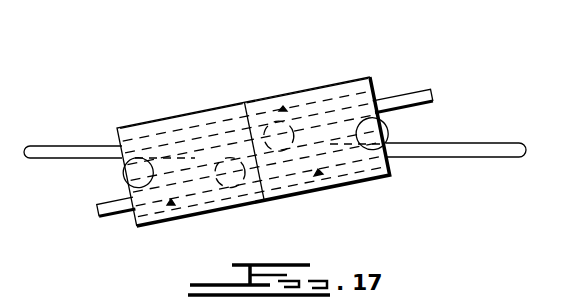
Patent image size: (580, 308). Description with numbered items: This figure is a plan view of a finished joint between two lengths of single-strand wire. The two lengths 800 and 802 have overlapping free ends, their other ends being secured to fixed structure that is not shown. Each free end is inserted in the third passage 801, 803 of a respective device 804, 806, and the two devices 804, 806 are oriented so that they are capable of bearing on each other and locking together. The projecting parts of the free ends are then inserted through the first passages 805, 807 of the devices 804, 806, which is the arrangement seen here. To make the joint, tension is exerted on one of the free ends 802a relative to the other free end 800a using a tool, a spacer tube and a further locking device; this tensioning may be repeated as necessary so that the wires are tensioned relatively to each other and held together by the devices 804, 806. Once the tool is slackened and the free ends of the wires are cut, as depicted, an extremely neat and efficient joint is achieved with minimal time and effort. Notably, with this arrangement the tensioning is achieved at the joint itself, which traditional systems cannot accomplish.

The length of wire 800 is at (60, 150).
The free end of wire 800a is at (397, 90).
The third passage 801 is at (255, 151).
The length of wire 802 is at (441, 152).
The free end of wire 802a is at (112, 213).
The third passage 803 is at (319, 173).
The device 804 is at (160, 127).
The first passage 805 is at (171, 206).
The device 806 is at (343, 97).
The first passage 807 is at (283, 106).